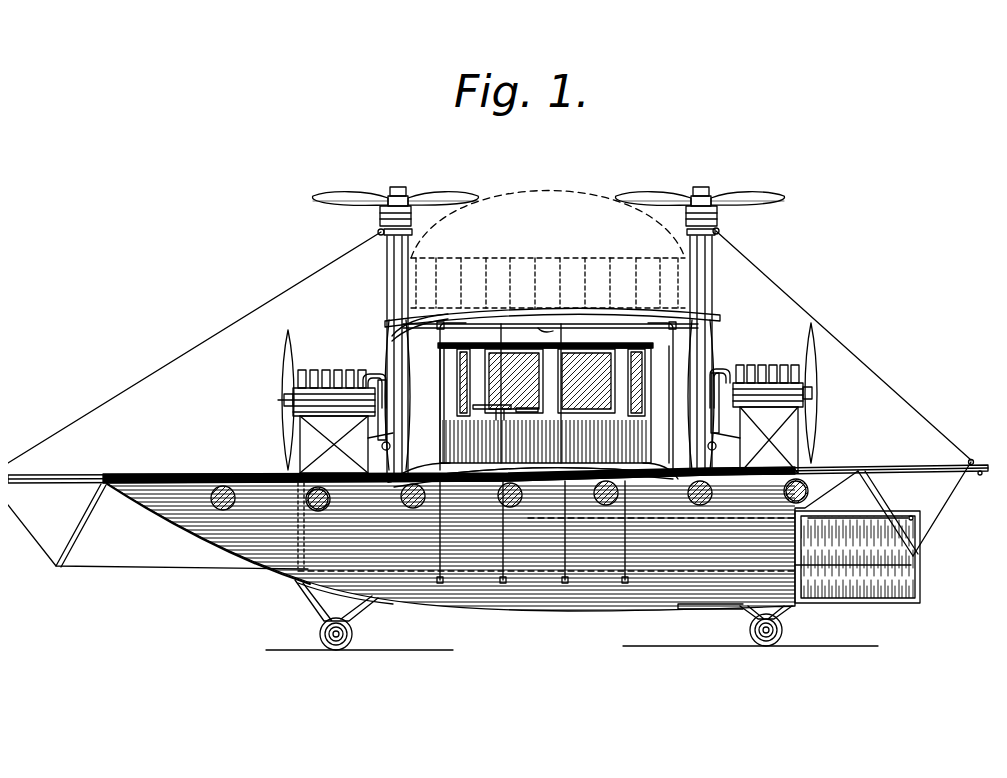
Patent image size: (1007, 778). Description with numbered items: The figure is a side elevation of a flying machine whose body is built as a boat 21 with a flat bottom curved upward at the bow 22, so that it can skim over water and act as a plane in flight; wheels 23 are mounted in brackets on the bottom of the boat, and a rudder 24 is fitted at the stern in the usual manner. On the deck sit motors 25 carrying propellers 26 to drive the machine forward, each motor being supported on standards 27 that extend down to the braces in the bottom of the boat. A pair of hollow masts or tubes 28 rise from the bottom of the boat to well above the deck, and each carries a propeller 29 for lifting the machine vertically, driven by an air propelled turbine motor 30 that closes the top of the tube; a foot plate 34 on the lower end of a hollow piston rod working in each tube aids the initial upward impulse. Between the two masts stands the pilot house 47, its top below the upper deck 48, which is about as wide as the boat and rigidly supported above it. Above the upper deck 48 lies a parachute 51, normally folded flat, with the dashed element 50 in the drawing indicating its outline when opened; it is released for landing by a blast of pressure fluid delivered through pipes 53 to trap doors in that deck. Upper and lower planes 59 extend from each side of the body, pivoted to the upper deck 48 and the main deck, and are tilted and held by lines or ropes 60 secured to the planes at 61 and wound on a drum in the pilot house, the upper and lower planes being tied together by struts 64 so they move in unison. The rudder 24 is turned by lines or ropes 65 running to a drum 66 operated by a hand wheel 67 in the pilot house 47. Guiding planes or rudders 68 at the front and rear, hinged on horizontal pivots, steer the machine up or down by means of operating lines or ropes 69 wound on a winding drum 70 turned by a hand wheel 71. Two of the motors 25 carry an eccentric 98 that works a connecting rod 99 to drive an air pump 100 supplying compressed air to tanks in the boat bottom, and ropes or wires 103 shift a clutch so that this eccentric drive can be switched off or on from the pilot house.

The boat 21 is at (232, 467).
The bow 22 is at (208, 538).
The wheels 23 is at (311, 627).
The rudder 24 is at (876, 584).
The motors 25 is at (320, 382).
The propellers 26 is at (277, 346).
The standards 27 is at (549, 440).
The hollow masts or tubes 28 is at (378, 258).
The propeller 29 is at (338, 189).
The air propelled turbine motor 30 is at (371, 206).
The foot plate 34 is at (386, 594).
The pilot house 47 is at (452, 420).
The upper deck 48 is at (378, 310).
The gas compartment 50 is at (498, 270).
The parachute 51 is at (551, 195).
The pipes 53 is at (548, 320).
The upper and lower planes 59 is at (380, 326).
The lines or ropes 60 is at (436, 333).
The securing points 61 is at (438, 452).
The struts 64 is at (374, 370).
The lines or ropes 65 is at (852, 510).
The drum 66 is at (524, 470).
The hand wheel 67 is at (526, 400).
The guiding planes or rudders 68 is at (50, 468).
The operating lines or ropes 69 is at (114, 393).
The winding drum 70 is at (495, 483).
The hand wheel 71 is at (551, 382).
The eccentric 98 is at (372, 368).
The connecting rod 99 is at (370, 426).
The air pump 100 is at (322, 485).
The ropes or wires 103 is at (376, 436).